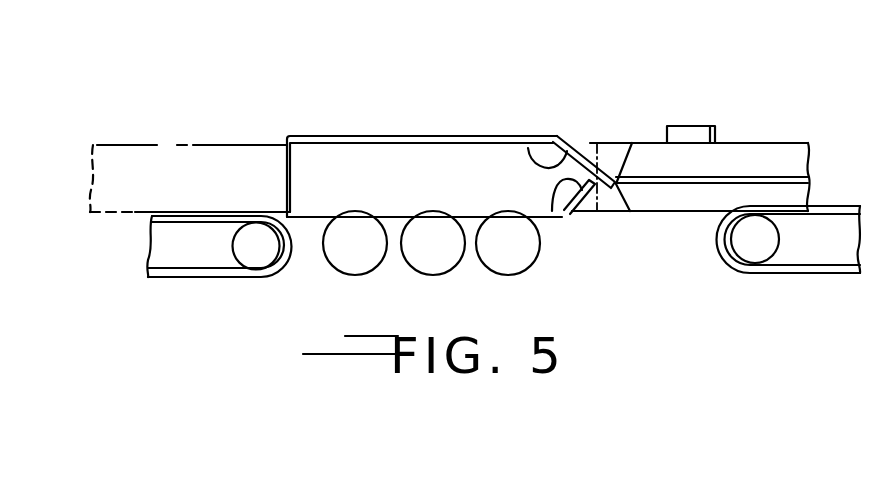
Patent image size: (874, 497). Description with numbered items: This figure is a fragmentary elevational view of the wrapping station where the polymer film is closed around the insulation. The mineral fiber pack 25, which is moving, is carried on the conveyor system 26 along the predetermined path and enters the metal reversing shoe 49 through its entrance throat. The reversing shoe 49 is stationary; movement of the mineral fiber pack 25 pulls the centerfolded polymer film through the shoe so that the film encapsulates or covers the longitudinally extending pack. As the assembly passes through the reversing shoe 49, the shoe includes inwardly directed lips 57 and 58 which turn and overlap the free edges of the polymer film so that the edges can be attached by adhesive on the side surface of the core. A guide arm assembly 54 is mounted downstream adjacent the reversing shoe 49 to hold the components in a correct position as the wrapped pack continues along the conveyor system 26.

The mineral fiber pack 25 is at (163, 145).
The conveyor system 26 is at (190, 279).
The metal reversing shoe 49 is at (362, 136).
The guide arm assembly 54 is at (686, 126).
The inwardly directed lip 57 is at (528, 148).
The inwardly directed lip 58 is at (562, 215).